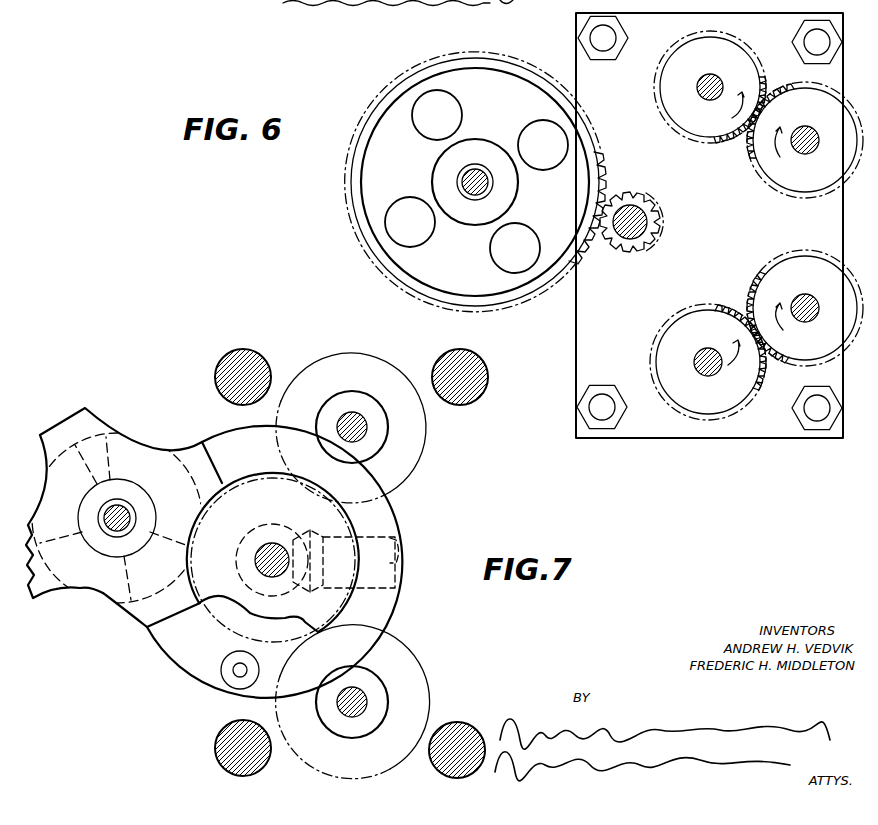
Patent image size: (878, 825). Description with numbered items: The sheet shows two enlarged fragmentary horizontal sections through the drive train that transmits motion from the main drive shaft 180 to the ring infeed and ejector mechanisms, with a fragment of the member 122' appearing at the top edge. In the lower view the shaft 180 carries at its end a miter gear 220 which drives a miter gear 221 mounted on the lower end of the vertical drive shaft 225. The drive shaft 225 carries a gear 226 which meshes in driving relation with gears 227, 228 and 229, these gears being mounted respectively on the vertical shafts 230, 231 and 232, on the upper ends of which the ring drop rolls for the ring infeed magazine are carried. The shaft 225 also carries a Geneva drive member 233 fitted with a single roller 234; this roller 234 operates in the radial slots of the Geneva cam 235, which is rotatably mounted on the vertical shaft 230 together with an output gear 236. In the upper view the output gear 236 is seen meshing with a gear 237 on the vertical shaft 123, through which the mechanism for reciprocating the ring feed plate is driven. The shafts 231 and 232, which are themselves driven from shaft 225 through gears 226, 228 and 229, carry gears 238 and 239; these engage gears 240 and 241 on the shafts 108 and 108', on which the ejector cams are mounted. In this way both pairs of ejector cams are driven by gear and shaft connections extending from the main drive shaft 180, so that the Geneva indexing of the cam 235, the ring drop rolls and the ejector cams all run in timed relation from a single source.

In FIG. 6, the member 122' is at (345, 11).
In FIG. 6, the vertical shaft 230 is at (492, 188).
In FIG. 7, the vertical shaft 230 is at (115, 505).
In FIG. 6, the output gear 236 is at (543, 283).
In FIG. 6, the vertical shaft 232 is at (710, 77).
In FIG. 7, the vertical shaft 232 is at (352, 418).
In FIG. 6, the gear 239 is at (660, 107).
In FIG. 6, the shaft 108' is at (802, 138).
In FIG. 6, the gear 241 is at (757, 173).
In FIG. 6, the gear 237 is at (648, 210).
In FIG. 6, the vertical shaft 123 is at (635, 237).
In FIG. 6, the gear 238 is at (683, 312).
In FIG. 6, the gear 240 is at (760, 277).
In FIG. 6, the shaft 108 is at (802, 309).
In FIG. 6, the vertical shaft 231 is at (710, 372).
In FIG. 7, the vertical shaft 231 is at (355, 710).
In FIG. 7, the Geneva cam 235 is at (107, 583).
In FIG. 7, the gear 227 is at (85, 597).
In FIG. 7, the Geneva drive member 233 is at (202, 673).
In FIG. 7, the vertical drive shaft 225 is at (262, 553).
In FIG. 7, the gear 226 is at (217, 622).
In FIG. 7, the miter gear 220 is at (302, 535).
In FIG. 7, the miter gear 221 is at (245, 573).
In FIG. 7, the main drive shaft 180 is at (373, 547).
In FIG. 7, the roller 234 is at (236, 680).
In FIG. 7, the gear 229 is at (427, 433).
In FIG. 7, the gear 228 is at (425, 670).